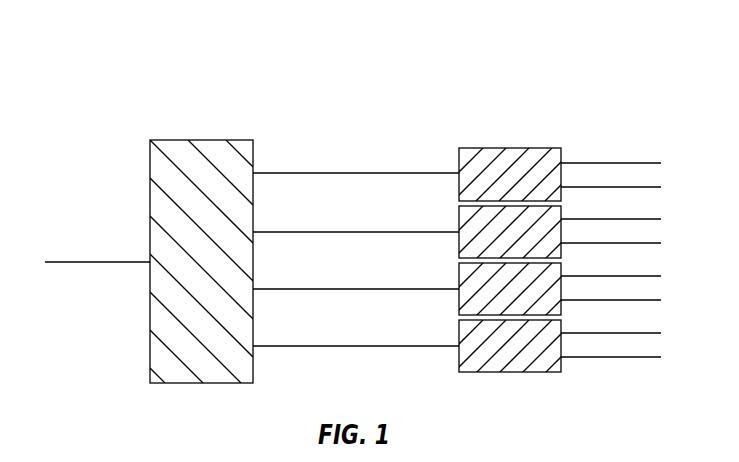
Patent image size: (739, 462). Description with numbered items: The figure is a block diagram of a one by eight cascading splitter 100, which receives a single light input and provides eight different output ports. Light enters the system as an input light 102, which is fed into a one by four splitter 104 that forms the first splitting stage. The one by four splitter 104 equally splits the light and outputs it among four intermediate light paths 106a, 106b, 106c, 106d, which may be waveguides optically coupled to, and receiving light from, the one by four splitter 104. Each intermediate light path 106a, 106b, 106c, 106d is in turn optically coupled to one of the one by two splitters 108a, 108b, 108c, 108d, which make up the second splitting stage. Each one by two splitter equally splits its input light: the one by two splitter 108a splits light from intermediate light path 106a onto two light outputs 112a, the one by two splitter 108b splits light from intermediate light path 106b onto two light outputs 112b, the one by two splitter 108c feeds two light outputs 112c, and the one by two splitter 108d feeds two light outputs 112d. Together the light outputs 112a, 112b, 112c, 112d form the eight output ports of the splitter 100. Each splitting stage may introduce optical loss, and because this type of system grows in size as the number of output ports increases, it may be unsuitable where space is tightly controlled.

The one by eight cascading splitter 100 is at (37, 66).
The input light 102 is at (92, 261).
The one by four splitter 104 is at (197, 140).
The intermediate light path 106a is at (310, 173).
The intermediate light path 106b is at (338, 232).
The intermediate light path 106c is at (311, 289).
The intermediate light path 106d is at (343, 346).
The one by two splitter 108a is at (508, 148).
The one by two splitter 108b is at (459, 216).
The one by two splitter 108c is at (459, 273).
The one by two splitter 108d is at (459, 330).
The light outputs 112a is at (668, 158).
The light outputs 112b is at (668, 214).
The light outputs 112c is at (668, 271).
The light outputs 112d is at (668, 328).